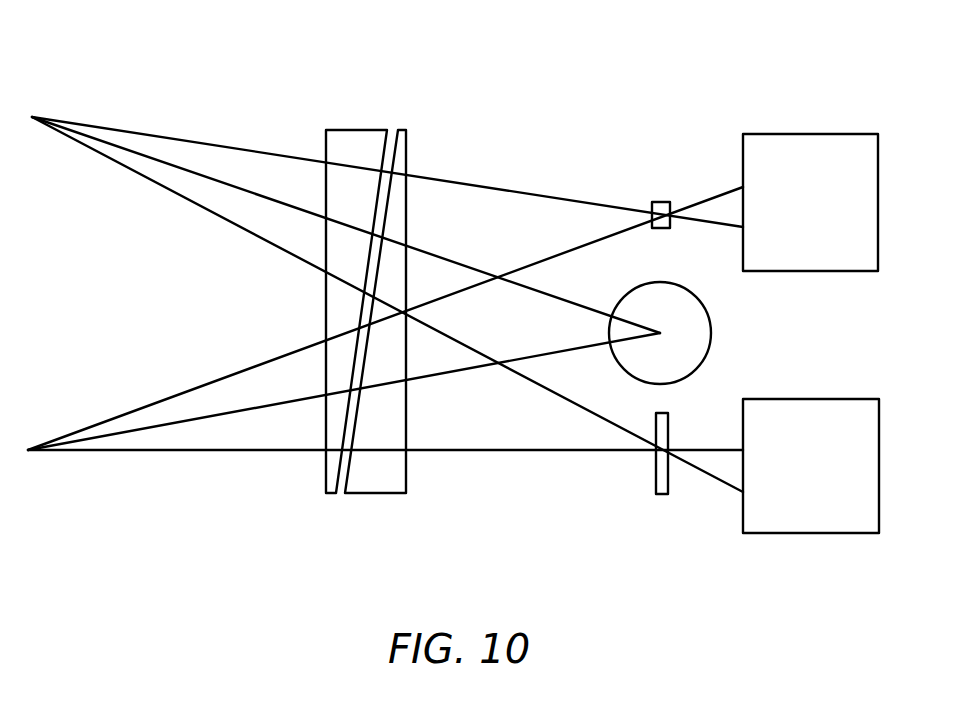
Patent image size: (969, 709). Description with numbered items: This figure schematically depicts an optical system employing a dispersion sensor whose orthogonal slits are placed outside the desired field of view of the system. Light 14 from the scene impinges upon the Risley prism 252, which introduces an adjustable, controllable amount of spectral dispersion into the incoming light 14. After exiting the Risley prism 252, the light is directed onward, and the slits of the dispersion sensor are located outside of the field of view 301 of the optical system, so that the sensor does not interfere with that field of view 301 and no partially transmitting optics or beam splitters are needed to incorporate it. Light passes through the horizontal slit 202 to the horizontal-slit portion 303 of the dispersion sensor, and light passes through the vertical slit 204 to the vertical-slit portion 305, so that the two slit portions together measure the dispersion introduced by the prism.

The light 14 is at (164, 104).
The Risley prism 252 is at (360, 130).
The horizontal slit 202 is at (660, 200).
The horizontal-slit portion 303 is at (808, 134).
The field of view 301 is at (712, 331).
The vertical slit 204 is at (654, 482).
The vertical-slit portion 305 is at (811, 533).